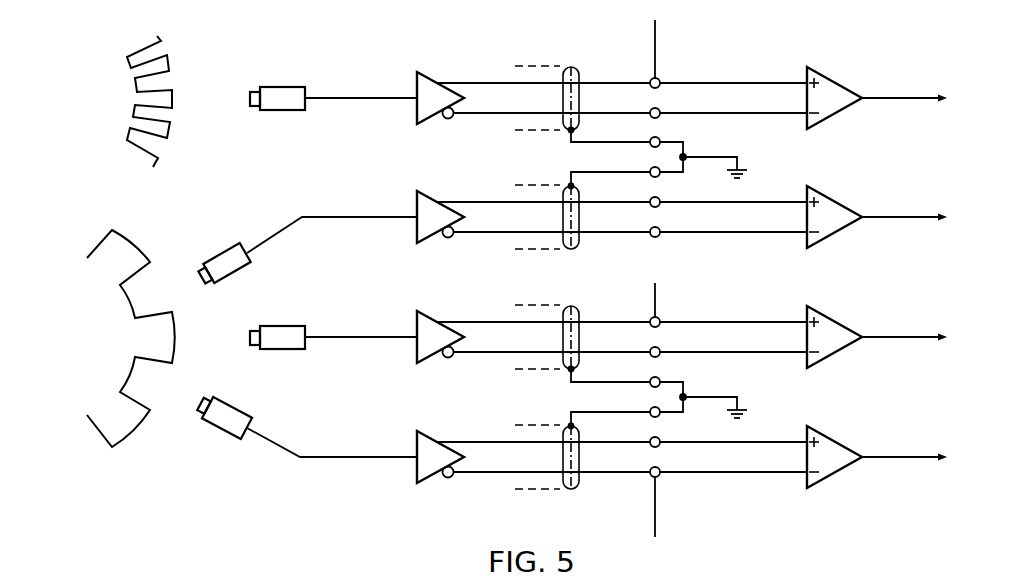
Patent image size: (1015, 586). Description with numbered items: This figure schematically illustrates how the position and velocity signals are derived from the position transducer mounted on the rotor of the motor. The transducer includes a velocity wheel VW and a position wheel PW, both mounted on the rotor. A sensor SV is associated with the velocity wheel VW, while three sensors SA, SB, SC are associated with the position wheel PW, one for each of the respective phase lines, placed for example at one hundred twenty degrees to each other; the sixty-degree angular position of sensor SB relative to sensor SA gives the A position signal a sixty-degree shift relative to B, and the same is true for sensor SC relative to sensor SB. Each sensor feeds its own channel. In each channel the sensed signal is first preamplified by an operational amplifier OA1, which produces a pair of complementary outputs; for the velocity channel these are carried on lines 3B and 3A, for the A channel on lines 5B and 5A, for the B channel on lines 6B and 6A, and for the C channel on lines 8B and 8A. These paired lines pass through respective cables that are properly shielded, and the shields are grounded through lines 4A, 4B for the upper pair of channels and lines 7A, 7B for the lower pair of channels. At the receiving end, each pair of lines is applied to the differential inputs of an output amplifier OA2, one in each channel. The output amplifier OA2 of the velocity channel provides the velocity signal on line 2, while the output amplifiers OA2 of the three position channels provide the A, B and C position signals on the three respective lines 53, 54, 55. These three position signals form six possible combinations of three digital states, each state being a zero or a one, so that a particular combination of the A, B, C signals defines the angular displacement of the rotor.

The velocity signal line 2 is at (911, 97).
The A position signal line 53 is at (914, 217).
The B position signal line 54 is at (918, 337).
The C position signal line 55 is at (919, 457).
The velocity sensor inverted signal line 3A is at (630, 103).
The velocity sensor signal line 3B is at (622, 73).
The shield ground line 4A is at (626, 138).
The shield ground line 4B is at (626, 169).
The position sensor A inverted signal line 5A is at (630, 223).
The position sensor A signal line 5B is at (622, 193).
The position sensor B inverted signal line 6A is at (630, 343).
The position sensor B signal line 6B is at (622, 313).
The shield ground line 7A is at (626, 378).
The shield ground line 7B is at (626, 409).
The position sensor C inverted signal line 8A is at (630, 463).
The position sensor C signal line 8B is at (622, 433).
The velocity sensor SV is at (292, 86).
The position sensor A SA is at (217, 254).
The position sensor B SB is at (292, 326).
The position sensor C SC is at (237, 393).
The preamplifier operational amplifier OA1 is at (416, 86).
The output amplifier OA2 is at (843, 72).
The velocity wheel VW is at (78, 115).
The position wheel PW is at (81, 365).